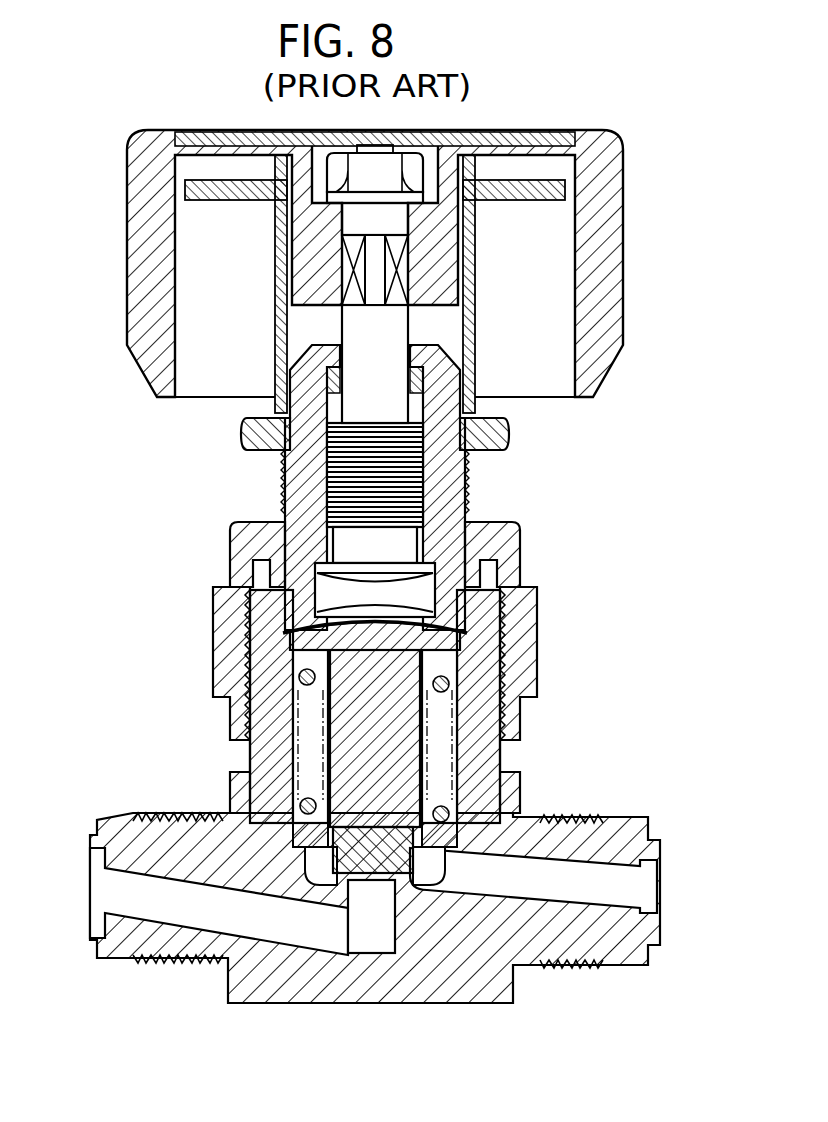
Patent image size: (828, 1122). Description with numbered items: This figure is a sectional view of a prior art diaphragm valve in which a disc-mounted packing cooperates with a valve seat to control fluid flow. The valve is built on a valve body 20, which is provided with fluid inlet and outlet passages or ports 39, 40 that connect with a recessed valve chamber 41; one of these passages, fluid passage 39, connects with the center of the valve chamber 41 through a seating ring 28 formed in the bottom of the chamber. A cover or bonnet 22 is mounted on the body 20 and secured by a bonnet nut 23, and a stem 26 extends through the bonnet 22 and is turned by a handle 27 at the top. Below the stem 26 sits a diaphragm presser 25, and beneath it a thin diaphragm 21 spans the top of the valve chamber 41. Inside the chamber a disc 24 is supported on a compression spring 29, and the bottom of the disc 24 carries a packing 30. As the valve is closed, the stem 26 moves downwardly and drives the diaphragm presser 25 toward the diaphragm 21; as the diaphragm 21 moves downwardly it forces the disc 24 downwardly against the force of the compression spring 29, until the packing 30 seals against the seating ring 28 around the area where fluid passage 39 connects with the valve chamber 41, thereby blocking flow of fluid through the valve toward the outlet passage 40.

The valve body 20 is at (435, 967).
The diaphragm 21 is at (250, 655).
The bonnet 22 is at (450, 540).
The bonnet nut 23 is at (248, 549).
The disc 24 is at (390, 775).
The diaphragm presser 25 is at (395, 600).
The stem 26 is at (418, 490).
The handle 27 is at (597, 290).
The seating ring 28 is at (330, 880).
The compression spring 29 is at (300, 720).
The packing 30 is at (360, 832).
The fluid inlet passage 39 is at (135, 893).
The fluid outlet passage 40 is at (617, 890).
The valve chamber 41 is at (455, 645).